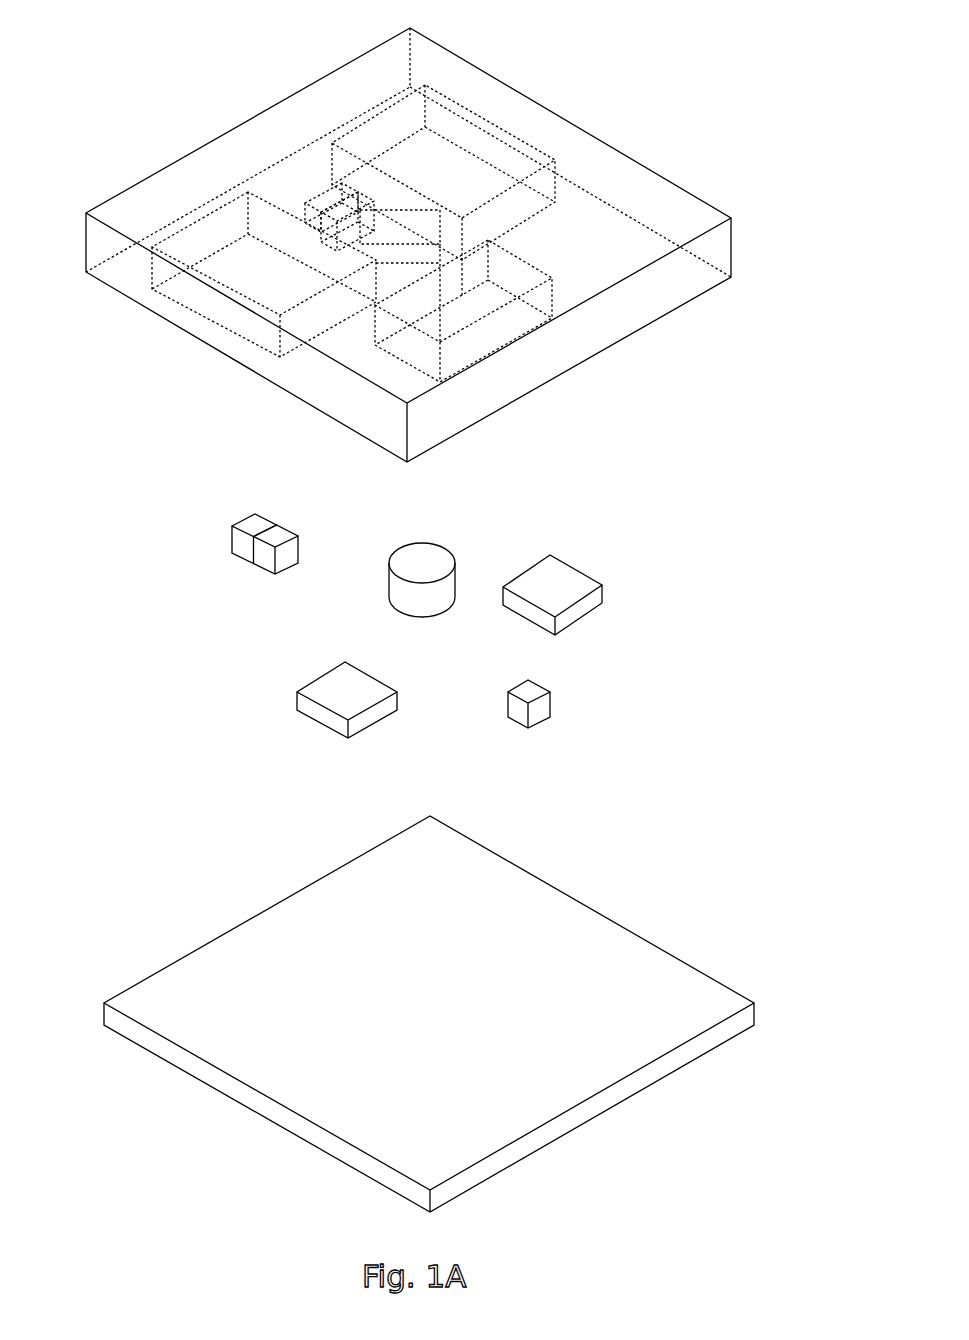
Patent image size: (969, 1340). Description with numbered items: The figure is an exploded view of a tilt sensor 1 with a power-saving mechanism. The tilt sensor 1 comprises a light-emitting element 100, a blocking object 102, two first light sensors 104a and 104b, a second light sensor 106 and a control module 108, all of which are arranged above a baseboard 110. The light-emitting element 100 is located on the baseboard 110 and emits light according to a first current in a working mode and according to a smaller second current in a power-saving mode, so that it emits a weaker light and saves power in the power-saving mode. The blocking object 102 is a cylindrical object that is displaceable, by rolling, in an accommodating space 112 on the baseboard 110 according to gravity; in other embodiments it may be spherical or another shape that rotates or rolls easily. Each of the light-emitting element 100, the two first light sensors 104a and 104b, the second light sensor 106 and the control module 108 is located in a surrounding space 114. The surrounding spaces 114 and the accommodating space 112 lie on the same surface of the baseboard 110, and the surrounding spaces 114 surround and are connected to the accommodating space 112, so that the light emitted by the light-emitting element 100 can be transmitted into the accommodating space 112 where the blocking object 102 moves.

The tilt sensor 1 is at (108, 14).
The light-emitting element 100 is at (553, 707).
The blocking object 102 is at (455, 562).
The first light sensor 104a is at (295, 710).
The first light sensor 104b is at (603, 585).
The second light sensor 106 is at (268, 567).
The control module 108 is at (232, 535).
The baseboard 110 is at (759, 1018).
The accommodating space 112 is at (442, 256).
The surrounding space 114 is at (322, 200).